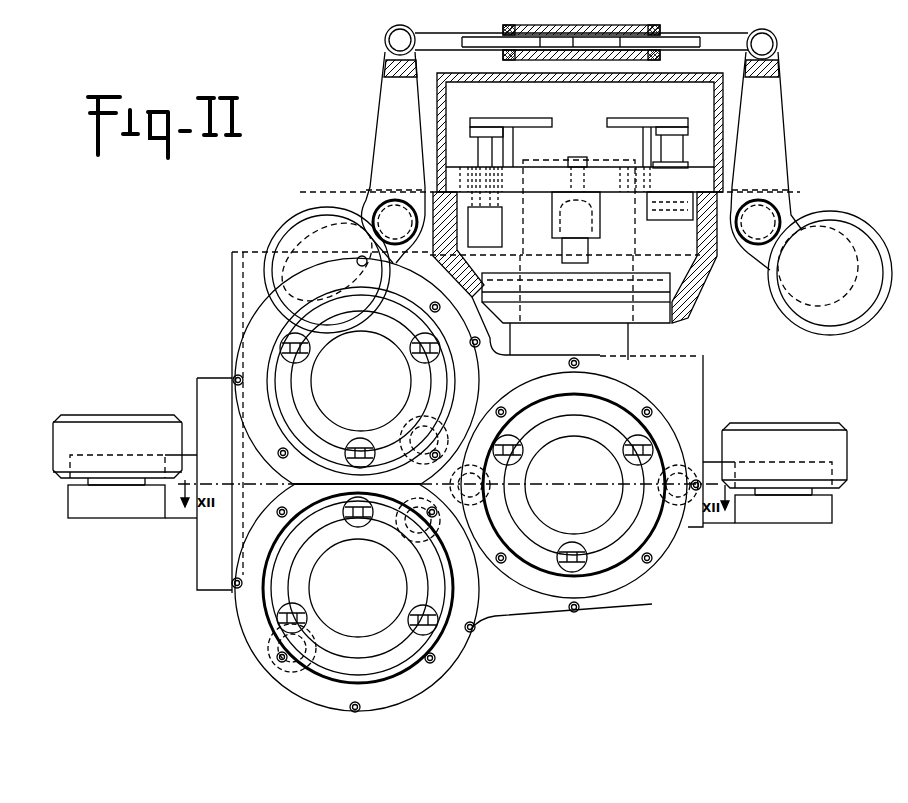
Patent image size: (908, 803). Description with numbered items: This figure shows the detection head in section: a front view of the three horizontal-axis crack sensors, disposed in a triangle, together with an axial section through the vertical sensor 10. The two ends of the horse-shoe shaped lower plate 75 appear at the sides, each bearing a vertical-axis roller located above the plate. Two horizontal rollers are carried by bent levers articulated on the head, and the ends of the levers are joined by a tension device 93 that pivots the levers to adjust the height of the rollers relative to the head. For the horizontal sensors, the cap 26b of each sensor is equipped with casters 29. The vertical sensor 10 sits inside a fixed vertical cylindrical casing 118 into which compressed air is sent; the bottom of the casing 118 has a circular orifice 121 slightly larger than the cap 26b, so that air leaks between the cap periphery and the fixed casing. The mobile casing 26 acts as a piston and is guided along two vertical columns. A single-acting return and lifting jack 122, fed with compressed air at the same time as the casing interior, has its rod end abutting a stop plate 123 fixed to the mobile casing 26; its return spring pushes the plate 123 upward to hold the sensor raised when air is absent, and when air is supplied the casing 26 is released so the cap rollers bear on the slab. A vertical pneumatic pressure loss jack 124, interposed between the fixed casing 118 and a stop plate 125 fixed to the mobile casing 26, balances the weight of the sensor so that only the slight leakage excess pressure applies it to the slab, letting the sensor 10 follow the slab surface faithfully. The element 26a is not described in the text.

The vertical-axis sensor 10 is at (702, 288).
The tension device 93 is at (512, 62).
The vertical cylindrical casing 118 is at (718, 150).
The mobile casing 26 is at (645, 263).
The central member 26a is at (596, 210).
The cap 26b is at (637, 318).
The return and lifting jack 122 is at (485, 207).
The stop plate 123 is at (478, 128).
The stop plate 125 is at (632, 128).
The vertical pneumatic pressure loss jack 124 is at (682, 138).
The circular orifice 121 is at (660, 314).
The casters 29 is at (588, 560).
The lower plate 75 is at (772, 515).